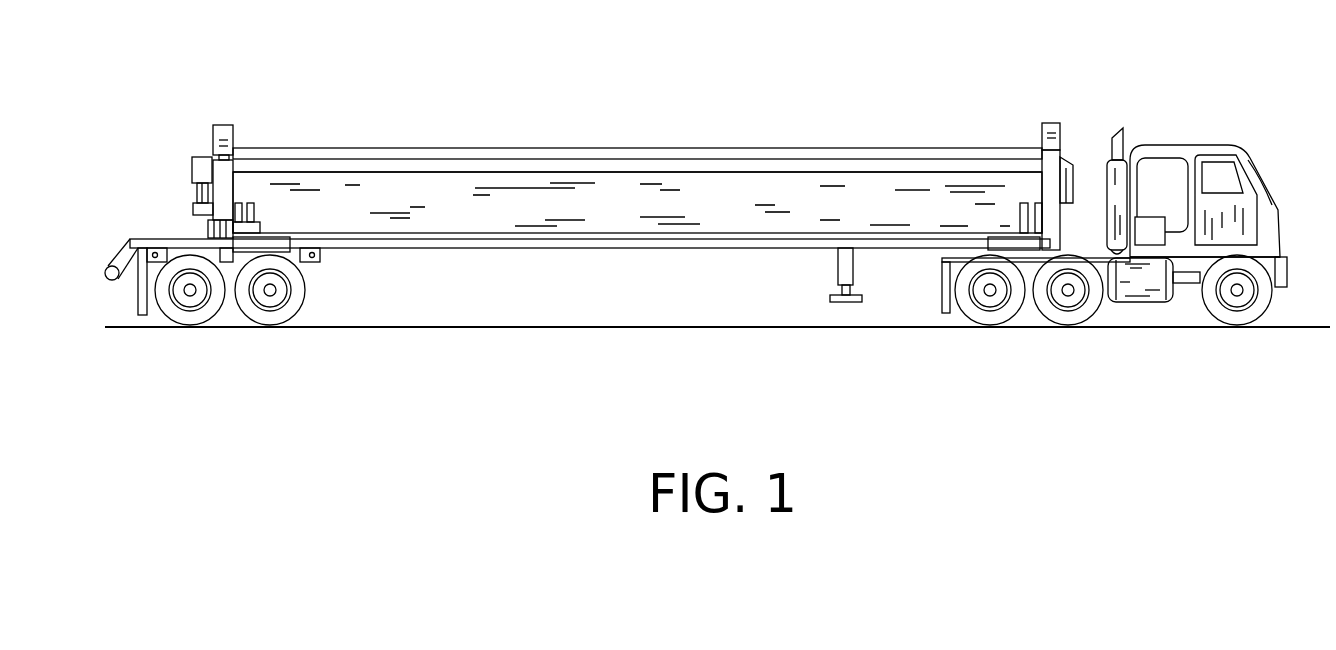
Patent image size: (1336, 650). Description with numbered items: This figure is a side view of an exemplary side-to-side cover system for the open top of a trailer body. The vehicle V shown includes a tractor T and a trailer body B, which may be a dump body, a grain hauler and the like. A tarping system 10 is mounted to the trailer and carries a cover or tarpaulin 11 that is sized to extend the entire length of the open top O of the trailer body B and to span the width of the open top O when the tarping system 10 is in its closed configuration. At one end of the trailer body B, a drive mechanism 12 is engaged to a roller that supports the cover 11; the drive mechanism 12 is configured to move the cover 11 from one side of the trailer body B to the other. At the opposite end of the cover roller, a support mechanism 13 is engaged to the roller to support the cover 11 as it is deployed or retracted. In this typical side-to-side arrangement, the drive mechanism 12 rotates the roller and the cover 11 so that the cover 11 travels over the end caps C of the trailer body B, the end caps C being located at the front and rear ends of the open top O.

The tarping system 10 is at (184, 146).
The cover or tarpaulin 11 is at (450, 170).
The drive mechanism 12 is at (193, 193).
The support mechanism 13 is at (1078, 186).
The end caps C is at (227, 132).
The open top O is at (687, 146).
The trailer body B is at (728, 174).
The vehicle V is at (1143, 111).
The tractor T is at (1268, 215).